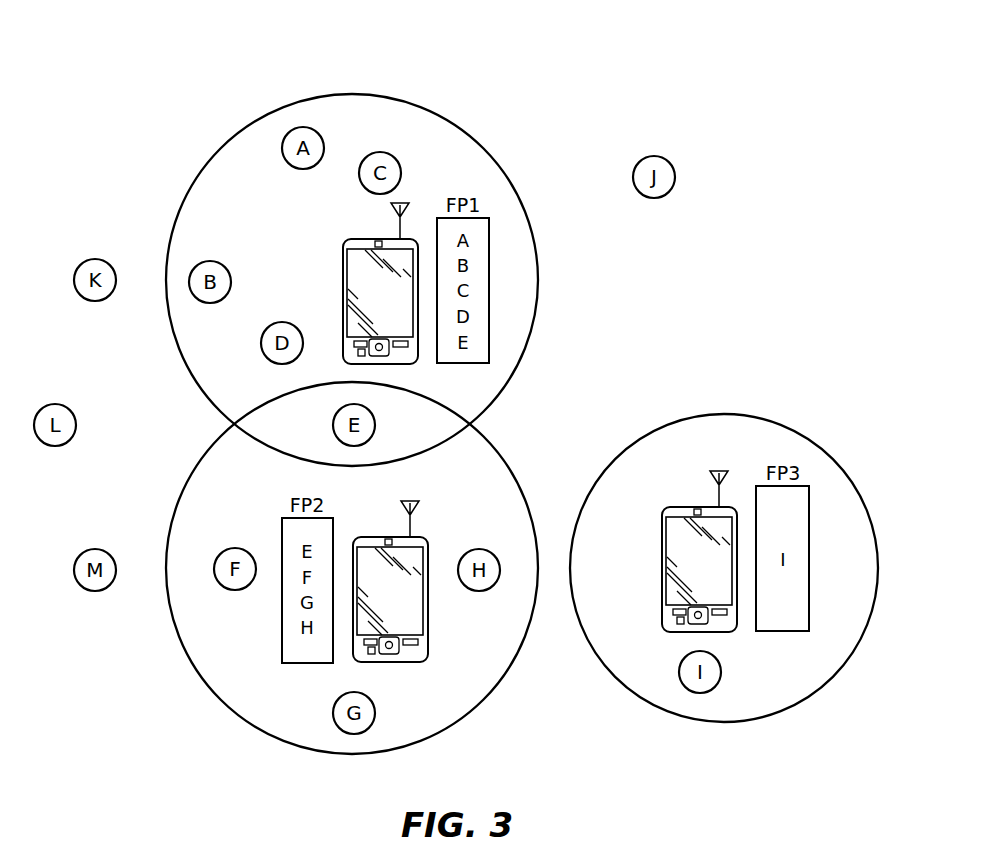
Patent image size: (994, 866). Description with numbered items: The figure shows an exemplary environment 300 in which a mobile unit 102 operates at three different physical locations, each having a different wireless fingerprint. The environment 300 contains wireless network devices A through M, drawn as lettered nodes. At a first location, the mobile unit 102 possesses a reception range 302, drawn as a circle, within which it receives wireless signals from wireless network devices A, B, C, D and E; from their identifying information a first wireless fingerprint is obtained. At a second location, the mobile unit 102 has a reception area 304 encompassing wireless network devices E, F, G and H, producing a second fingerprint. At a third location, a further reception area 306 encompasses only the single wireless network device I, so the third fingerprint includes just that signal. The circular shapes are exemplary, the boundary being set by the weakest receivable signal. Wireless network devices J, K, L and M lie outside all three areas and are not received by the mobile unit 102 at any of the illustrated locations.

The environment 300 is at (603, 71).
The reception range 302 is at (224, 148).
The reception area 304 is at (222, 702).
The third coverage area 306 is at (736, 416).
The mobile unit 102 is at (343, 273).